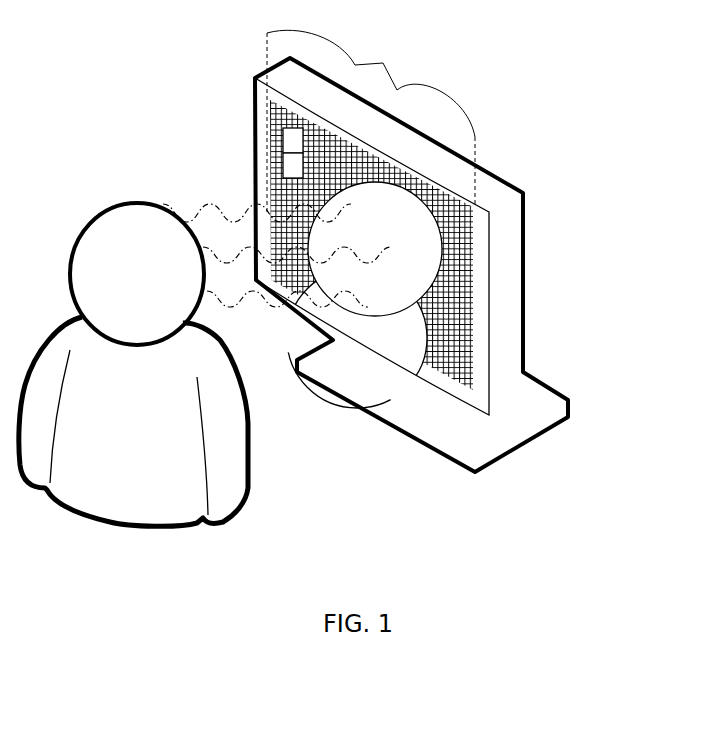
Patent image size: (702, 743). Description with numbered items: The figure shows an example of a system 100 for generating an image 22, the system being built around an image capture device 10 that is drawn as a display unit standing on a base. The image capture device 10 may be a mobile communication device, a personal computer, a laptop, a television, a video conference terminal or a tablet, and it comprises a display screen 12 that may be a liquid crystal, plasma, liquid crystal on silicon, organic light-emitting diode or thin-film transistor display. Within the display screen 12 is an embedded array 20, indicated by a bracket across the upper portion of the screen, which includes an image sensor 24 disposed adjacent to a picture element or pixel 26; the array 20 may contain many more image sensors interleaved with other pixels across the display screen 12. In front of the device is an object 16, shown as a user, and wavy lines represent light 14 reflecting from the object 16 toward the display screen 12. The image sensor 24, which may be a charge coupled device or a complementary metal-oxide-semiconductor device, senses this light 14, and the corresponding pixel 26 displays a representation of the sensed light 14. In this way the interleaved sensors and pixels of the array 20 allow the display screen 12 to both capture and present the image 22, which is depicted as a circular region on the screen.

The system 100 is at (203, 58).
The image capture device 10 is at (382, 265).
The display screen 12 is at (402, 261).
The light 14 is at (242, 300).
The object 16 is at (144, 273).
The embedded array 20 is at (371, 122).
The image 22 is at (398, 233).
The image sensor 24 is at (270, 121).
The picture element (pixel) 26 is at (272, 158).